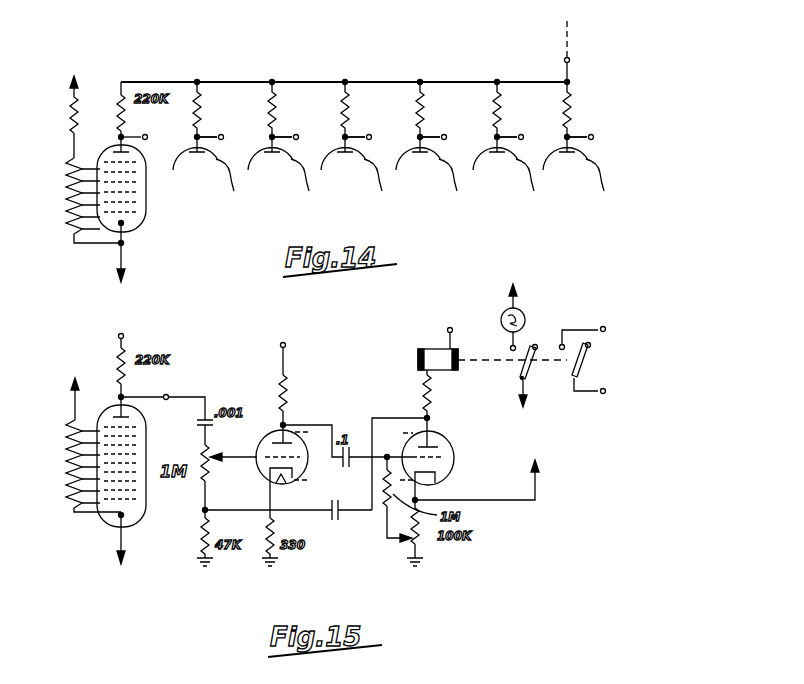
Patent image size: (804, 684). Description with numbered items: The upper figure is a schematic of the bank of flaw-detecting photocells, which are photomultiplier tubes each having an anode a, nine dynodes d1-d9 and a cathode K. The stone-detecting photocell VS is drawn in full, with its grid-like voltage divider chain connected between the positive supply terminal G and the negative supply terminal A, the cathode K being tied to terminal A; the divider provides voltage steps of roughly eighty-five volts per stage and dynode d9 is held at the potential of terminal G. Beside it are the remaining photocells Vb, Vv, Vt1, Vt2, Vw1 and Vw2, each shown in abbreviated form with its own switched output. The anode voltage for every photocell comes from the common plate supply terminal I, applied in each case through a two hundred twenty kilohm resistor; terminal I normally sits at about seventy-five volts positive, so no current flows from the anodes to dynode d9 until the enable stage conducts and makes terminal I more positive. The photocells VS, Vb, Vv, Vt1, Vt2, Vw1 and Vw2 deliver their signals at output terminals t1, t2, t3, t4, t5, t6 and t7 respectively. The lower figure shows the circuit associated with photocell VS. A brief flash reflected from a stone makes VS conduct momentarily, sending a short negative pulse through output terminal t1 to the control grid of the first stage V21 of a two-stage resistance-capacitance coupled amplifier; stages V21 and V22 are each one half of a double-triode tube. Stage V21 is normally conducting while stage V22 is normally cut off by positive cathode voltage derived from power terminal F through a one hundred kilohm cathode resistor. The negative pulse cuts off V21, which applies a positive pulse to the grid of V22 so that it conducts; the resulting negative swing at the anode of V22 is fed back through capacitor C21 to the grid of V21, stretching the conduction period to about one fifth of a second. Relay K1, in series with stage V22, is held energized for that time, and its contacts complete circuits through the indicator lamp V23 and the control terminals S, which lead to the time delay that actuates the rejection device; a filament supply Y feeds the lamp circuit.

In FIG. 14, the positive supply terminal G is at (93, 145).
In FIG. 15, the positive supply terminal G is at (93, 434).
In FIG. 14, the anode a is at (118, 146).
In FIG. 15, the anode a is at (118, 412).
In FIG. 14, the output terminal t1 is at (138, 128).
In FIG. 15, the output terminal t1 is at (162, 397).
In FIG. 14, the output terminal t2 is at (216, 126).
In FIG. 14, the output terminal t3 is at (289, 126).
In FIG. 14, the output terminal t4 is at (363, 126).
In FIG. 14, the output terminal t5 is at (437, 126).
In FIG. 14, the output terminal t6 is at (514, 126).
In FIG. 14, the output terminal t7 is at (589, 126).
In FIG. 14, the dynodes d1-d9 is at (128, 217).
In FIG. 14, the stone-detecting photocell VS is at (138, 230).
In FIG. 15, the stone-detecting photocell VS is at (133, 478).
In FIG. 14, the cathode K is at (130, 244).
In FIG. 15, the cathode K is at (118, 520).
In FIG. 14, the negative supply terminal A is at (117, 273).
In FIG. 15, the negative supply terminal A is at (117, 551).
In FIG. 14, the flaw-detecting photocell Vb is at (210, 149).
In FIG. 14, the flaw-detecting photocell Vv is at (280, 149).
In FIG. 14, the flaw-detecting photocell Vt1 is at (351, 144).
In FIG. 14, the flaw-detecting photocell Vt2 is at (426, 144).
In FIG. 14, the flaw-detecting photocell Vw1 is at (503, 144).
In FIG. 14, the flaw-detecting photocell Vw2 is at (585, 144).
In FIG. 14, the plate supply terminal I is at (575, 51).
In FIG. 15, the plate supply terminal I is at (286, 341).
In FIG. 15, the first amplifier stage V21 is at (262, 471).
In FIG. 15, the second amplifier stage V22 is at (447, 472).
In FIG. 15, the indicator lamp V23 is at (523, 312).
In FIG. 15, the relay K1 is at (418, 355).
In FIG. 15, the capacitor C21 is at (340, 521).
In FIG. 15, the control terminals S is at (594, 362).
In FIG. 15, the filament voltage Y is at (518, 349).
In FIG. 15, the positive supply terminal F is at (480, 470).